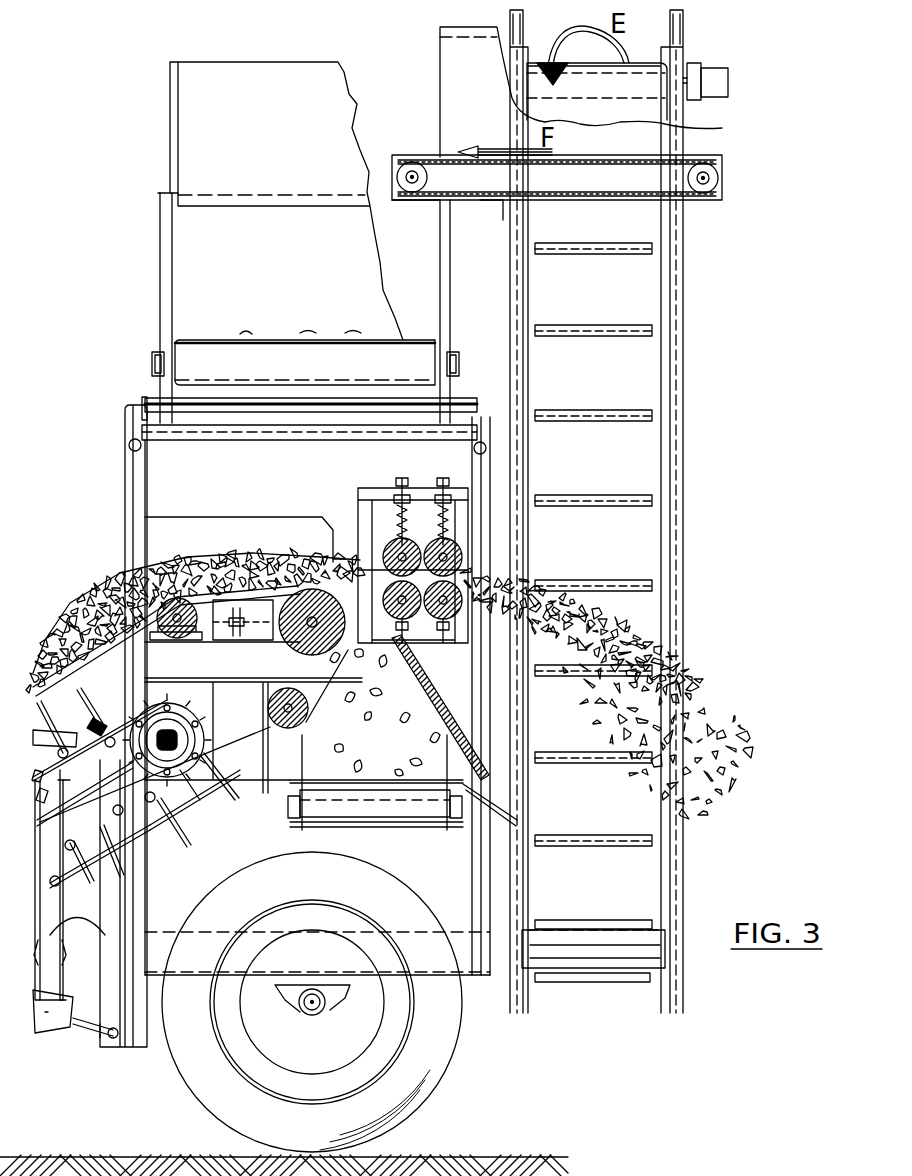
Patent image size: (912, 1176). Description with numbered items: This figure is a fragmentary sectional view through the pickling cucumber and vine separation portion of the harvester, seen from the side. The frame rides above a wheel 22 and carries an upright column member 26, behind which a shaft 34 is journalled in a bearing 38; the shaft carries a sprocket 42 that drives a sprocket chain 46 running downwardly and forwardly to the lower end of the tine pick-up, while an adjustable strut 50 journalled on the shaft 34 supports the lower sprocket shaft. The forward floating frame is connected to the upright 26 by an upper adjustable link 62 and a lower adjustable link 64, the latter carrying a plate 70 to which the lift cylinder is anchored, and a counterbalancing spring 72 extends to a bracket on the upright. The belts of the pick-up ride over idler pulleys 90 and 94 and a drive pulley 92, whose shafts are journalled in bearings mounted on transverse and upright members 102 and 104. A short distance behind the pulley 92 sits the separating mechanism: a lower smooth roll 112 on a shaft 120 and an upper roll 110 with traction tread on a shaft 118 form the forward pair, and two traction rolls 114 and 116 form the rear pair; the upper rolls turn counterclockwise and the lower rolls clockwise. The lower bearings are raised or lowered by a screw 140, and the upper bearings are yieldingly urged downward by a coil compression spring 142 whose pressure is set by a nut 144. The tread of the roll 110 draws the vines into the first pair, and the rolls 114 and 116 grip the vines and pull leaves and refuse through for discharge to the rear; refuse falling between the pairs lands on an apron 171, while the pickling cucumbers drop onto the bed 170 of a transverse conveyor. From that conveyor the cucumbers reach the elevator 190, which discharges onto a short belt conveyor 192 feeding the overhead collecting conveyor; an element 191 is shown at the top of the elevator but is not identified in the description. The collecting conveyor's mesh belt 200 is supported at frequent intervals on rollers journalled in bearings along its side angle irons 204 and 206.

The wheel 22 is at (445, 1062).
The upright column member 26 is at (130, 477).
The shaft 34 is at (188, 735).
The bearing 38 is at (168, 823).
The sprocket 42 is at (168, 682).
The sprocket chain 46 is at (118, 718).
The adjustable strut 50 is at (140, 873).
The upper adjustable link 62 is at (73, 733).
The lower adjustable link 64 is at (50, 1025).
The plate 70 is at (72, 1014).
The counterbalancing spring 72 is at (69, 890).
The idler pulley 90 is at (177, 550).
The drive pulley 92 is at (273, 553).
The idler pulley 94 is at (264, 760).
The transverse member 102 is at (308, 679).
The upright member 104 is at (260, 721).
The upper roll with traction tread 110 is at (393, 547).
The lower smooth roll 112 is at (440, 707).
The traction roll 114 is at (461, 558).
The traction roll 116 is at (458, 612).
The shaft 118 is at (386, 550).
The shaft 120 is at (385, 712).
The screw 140 is at (435, 650).
The coil compression spring 142 is at (448, 545).
The nut 144 is at (397, 505).
The bed of transverse conveyor 170 is at (348, 787).
The apron 171 is at (440, 685).
The elevator 190 is at (632, 446).
The motor 191 is at (710, 66).
The short belt conveyor 192 is at (643, 158).
The conveyor belt 200 is at (210, 337).
The side angle iron 204 is at (167, 390).
The side angle iron 206 is at (447, 390).